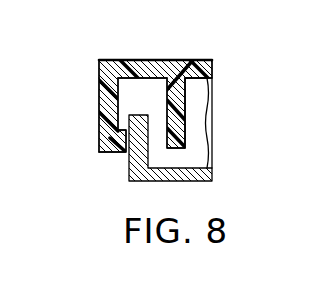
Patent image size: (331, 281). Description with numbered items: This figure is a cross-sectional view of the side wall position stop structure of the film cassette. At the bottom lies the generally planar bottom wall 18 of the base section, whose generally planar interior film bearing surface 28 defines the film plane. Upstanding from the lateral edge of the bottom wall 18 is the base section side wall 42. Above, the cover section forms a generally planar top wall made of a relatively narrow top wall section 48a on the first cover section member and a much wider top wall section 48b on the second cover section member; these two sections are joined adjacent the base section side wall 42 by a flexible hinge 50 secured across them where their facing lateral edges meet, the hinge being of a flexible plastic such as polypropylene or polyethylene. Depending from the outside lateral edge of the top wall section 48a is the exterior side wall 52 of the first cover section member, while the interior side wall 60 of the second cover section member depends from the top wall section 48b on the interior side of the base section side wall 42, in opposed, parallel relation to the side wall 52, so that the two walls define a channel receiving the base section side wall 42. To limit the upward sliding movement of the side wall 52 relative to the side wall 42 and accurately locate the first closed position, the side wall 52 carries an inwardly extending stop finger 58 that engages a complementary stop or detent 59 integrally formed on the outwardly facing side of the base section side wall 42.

The bottom wall 18 is at (171, 187).
The interior film bearing surface 28 is at (199, 168).
The base section side wall 42 is at (152, 156).
The top wall section 48a is at (99, 75).
The top wall section 48b is at (202, 67).
The flexible hinge 50 is at (141, 60).
The exterior side wall 52 is at (100, 101).
The stop finger 58 is at (112, 151).
The stop or detent 59 is at (128, 118).
The interior side wall 60 is at (176, 95).